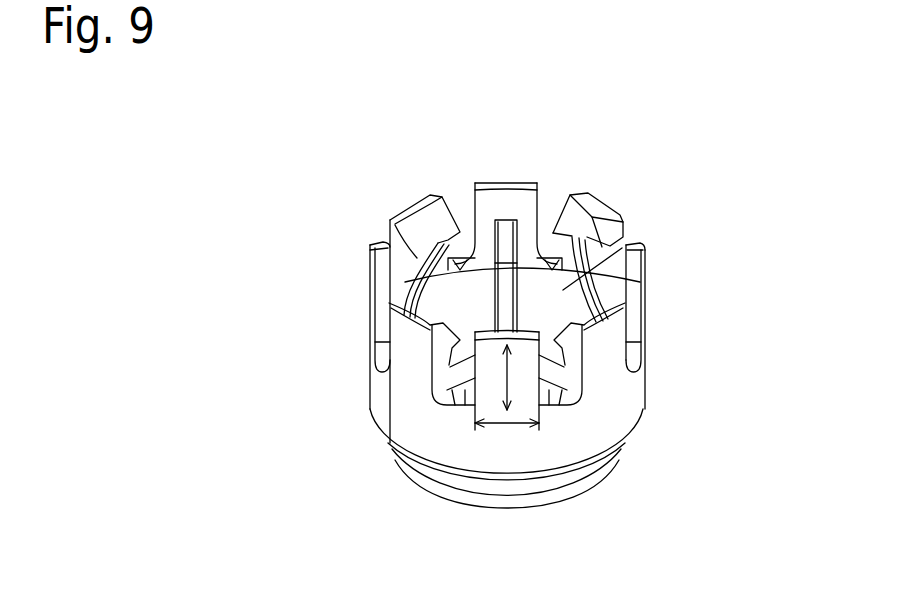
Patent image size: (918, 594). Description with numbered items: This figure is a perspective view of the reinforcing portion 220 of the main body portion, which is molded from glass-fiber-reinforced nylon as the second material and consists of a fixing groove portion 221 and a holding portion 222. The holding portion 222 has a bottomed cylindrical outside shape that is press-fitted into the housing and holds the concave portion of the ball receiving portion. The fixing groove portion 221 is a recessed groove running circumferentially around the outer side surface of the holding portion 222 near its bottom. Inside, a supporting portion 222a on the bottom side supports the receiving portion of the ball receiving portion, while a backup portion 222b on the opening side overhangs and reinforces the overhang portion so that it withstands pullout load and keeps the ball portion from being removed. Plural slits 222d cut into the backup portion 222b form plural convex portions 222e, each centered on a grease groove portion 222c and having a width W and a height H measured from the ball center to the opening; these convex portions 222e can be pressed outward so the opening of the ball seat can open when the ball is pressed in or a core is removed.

The reinforcing portion 220 is at (650, 212).
The fixing groove portion 221 is at (467, 478).
The holding portion 222 is at (650, 397).
The supporting portion 222a is at (563, 291).
The backup portion 222b is at (410, 245).
The grease groove portion 222c is at (506, 232).
The slit 222d is at (433, 237).
The convex portion 222e is at (410, 357).